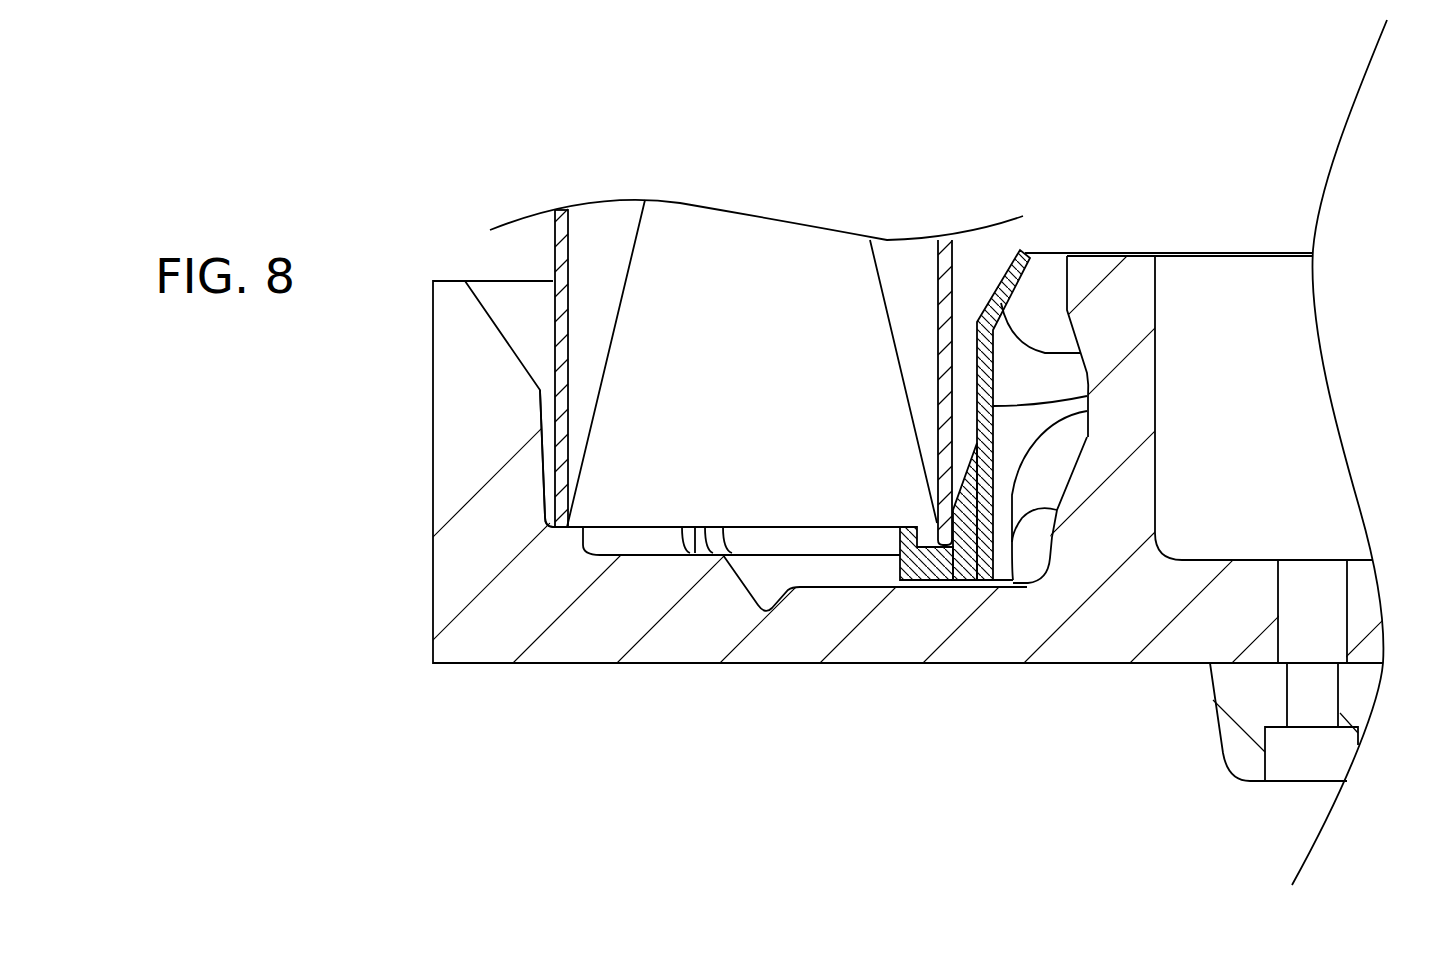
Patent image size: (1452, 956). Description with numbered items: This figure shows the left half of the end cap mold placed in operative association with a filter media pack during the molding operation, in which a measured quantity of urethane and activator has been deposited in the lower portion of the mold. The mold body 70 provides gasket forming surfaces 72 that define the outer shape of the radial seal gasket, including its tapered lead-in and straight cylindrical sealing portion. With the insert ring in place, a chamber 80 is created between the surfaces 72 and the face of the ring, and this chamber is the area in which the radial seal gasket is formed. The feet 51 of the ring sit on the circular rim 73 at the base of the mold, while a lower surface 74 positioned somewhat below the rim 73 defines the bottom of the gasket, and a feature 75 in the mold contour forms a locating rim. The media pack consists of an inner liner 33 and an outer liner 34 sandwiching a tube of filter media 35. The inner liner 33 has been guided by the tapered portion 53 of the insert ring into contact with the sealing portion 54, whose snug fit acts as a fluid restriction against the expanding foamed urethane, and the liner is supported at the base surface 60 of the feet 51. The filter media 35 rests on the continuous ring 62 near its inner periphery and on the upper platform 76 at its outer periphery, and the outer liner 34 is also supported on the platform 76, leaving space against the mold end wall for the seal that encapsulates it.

The inner liner 33 is at (947, 390).
The outer liner 34 is at (563, 279).
The filter media 35 is at (768, 372).
The feet 51 is at (943, 563).
The tapered portion 53 is at (977, 457).
The sealing portion 54 is at (953, 510).
The base surface 60 is at (953, 570).
The continuous ring 62 is at (927, 533).
The body 70 is at (1130, 637).
The gasket forming surfaces 72 is at (1005, 305).
The circular rim 73 is at (967, 577).
The lower surface 74 is at (823, 589).
The feature for forming a locating rim 75 is at (767, 613).
The upper platform 76 is at (567, 527).
The chamber 80 is at (947, 335).